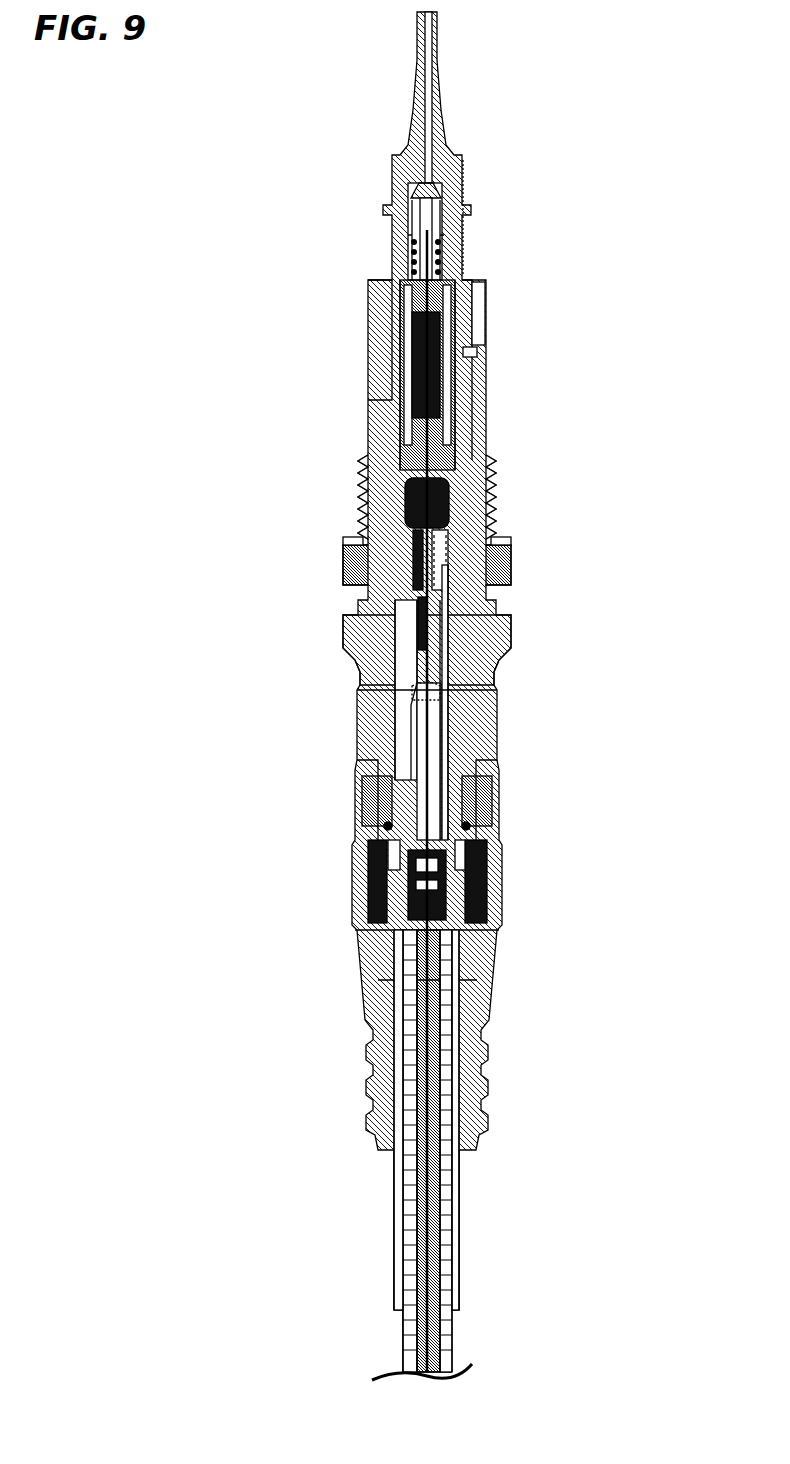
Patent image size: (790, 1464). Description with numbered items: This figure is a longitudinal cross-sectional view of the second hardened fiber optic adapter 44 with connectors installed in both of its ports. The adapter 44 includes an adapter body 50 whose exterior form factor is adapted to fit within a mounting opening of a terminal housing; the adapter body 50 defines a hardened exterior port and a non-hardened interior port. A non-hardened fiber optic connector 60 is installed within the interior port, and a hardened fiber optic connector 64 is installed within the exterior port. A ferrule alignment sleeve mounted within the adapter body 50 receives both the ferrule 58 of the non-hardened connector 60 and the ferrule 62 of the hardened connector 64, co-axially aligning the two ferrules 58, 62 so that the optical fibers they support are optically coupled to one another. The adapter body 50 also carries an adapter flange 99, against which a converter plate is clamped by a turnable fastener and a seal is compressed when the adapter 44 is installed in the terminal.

The second hardened fiber optic adapter 44 is at (348, 501).
The adapter body 50 is at (368, 357).
The ferrule 58 is at (438, 393).
The non-hardened fiber optic connector 60 is at (405, 192).
The ferrule 62 is at (428, 434).
The hardened fiber optic connector 64 is at (407, 777).
The adapter flange 99 is at (503, 612).